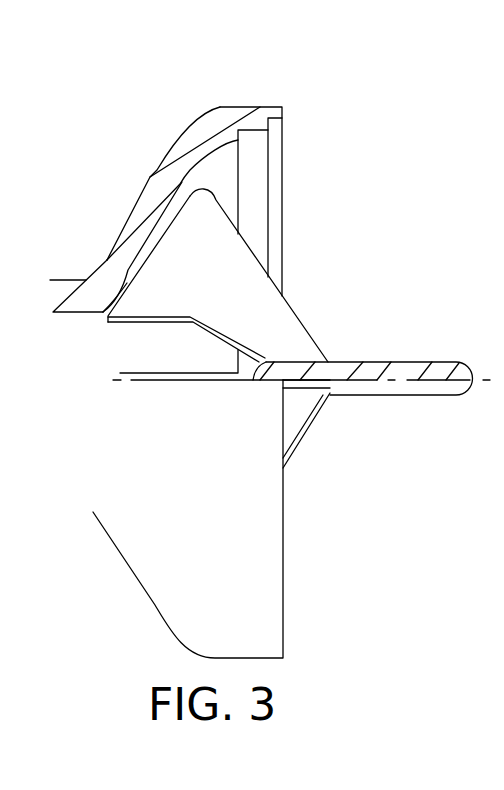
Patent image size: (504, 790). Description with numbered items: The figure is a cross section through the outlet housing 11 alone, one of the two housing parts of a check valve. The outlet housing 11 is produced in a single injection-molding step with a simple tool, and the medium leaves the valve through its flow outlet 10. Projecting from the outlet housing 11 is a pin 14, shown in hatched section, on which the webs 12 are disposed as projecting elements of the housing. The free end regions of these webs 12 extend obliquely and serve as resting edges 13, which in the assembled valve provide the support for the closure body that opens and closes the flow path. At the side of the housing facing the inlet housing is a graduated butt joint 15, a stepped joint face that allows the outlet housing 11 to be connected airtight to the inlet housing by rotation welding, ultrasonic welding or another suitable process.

The flow outlet 10 is at (85, 395).
The outlet housing 11 is at (110, 549).
The web 12 is at (235, 268).
The resting edge 13 is at (292, 305).
The pin 14 is at (410, 372).
The graduated butt joint 15 is at (262, 117).